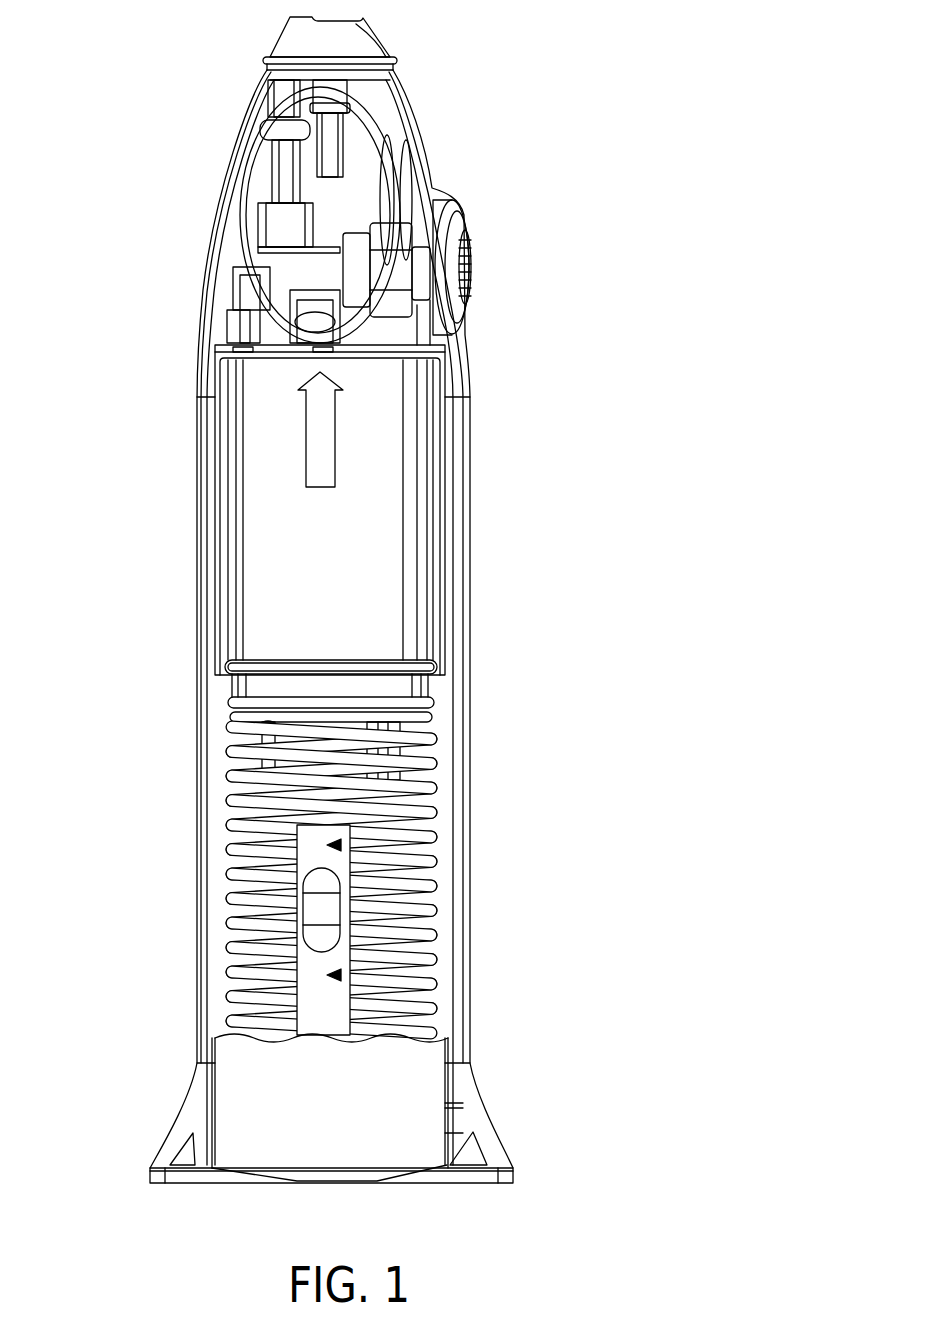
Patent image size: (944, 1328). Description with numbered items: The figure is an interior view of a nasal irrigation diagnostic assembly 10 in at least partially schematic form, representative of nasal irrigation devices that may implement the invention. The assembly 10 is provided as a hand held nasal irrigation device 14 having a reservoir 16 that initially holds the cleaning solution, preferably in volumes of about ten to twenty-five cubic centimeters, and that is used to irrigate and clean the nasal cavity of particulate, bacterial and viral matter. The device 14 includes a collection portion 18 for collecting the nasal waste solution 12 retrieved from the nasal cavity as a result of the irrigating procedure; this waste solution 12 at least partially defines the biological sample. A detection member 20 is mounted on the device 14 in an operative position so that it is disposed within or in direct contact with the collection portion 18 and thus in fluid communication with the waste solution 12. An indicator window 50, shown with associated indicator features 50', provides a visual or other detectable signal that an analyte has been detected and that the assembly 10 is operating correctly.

The nasal irrigation diagnostic assembly 10 is at (580, 192).
The nasal waste solution 12 is at (240, 1105).
The hand held nasal irrigation device 14 is at (412, 688).
The reservoir 16 is at (412, 485).
The collection portion 18 is at (432, 1021).
The detection member 20 is at (341, 975).
The indicator window 50 is at (424, 868).
The slot markers 50' is at (236, 908).